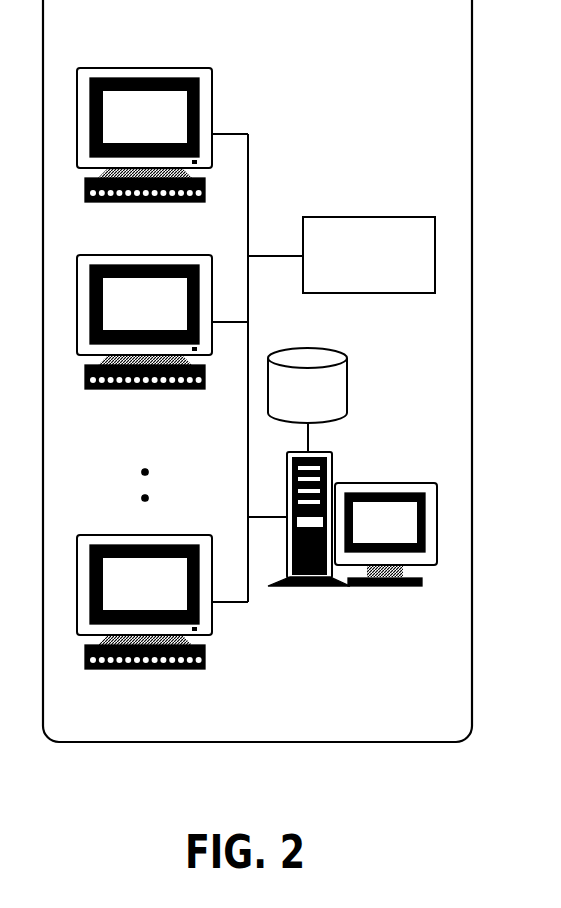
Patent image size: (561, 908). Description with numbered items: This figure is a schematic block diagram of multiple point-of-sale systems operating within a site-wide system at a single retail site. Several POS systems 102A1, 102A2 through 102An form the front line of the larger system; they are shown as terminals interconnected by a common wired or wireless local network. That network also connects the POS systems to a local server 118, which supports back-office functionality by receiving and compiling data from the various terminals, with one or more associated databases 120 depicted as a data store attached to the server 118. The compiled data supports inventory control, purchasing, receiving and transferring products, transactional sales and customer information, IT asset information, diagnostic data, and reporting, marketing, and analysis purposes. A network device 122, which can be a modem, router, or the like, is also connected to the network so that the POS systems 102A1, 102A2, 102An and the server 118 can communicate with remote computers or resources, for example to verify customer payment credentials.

The POS system 102A1 is at (272, 124).
The POS system 102A2 is at (224, 384).
The POS system 102An is at (233, 650).
The network device 122 is at (369, 220).
The database 120 is at (318, 350).
The local server 118 is at (372, 470).